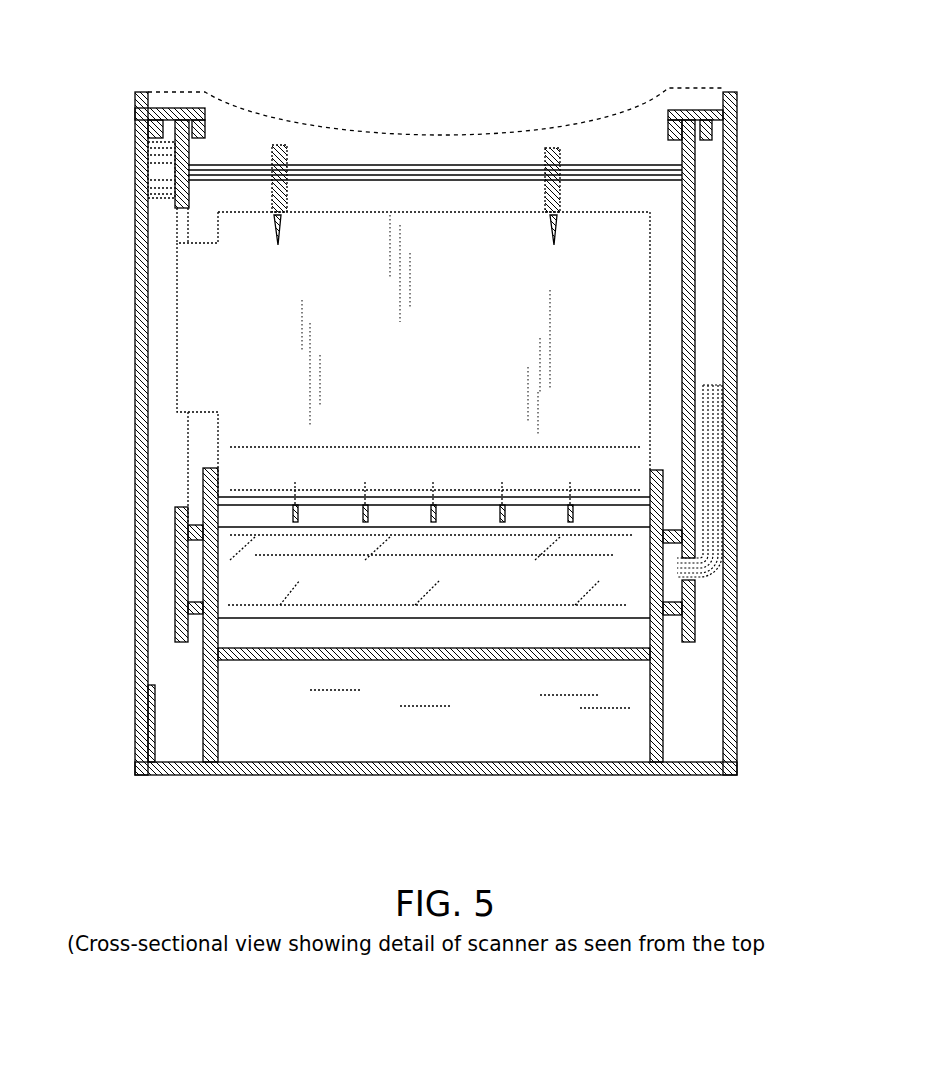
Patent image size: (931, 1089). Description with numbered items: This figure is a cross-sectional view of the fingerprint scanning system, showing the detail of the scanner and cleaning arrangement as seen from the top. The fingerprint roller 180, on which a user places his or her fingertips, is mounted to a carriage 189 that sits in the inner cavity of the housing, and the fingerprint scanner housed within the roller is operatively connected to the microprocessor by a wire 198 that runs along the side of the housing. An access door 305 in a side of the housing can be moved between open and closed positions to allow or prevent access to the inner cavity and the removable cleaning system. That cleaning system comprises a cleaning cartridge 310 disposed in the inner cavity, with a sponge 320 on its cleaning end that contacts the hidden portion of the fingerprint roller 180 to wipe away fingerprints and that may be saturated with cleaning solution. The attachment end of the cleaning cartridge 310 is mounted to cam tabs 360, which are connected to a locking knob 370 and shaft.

The fingerprint roller 180 is at (510, 593).
The carriage 189 is at (695, 315).
The wire 198 is at (715, 435).
The access door 305 is at (133, 338).
The cleaning cartridge 310 is at (215, 283).
The sponge 320 is at (232, 503).
The cam tabs 360 is at (285, 152).
The locking knob 370 is at (150, 171).